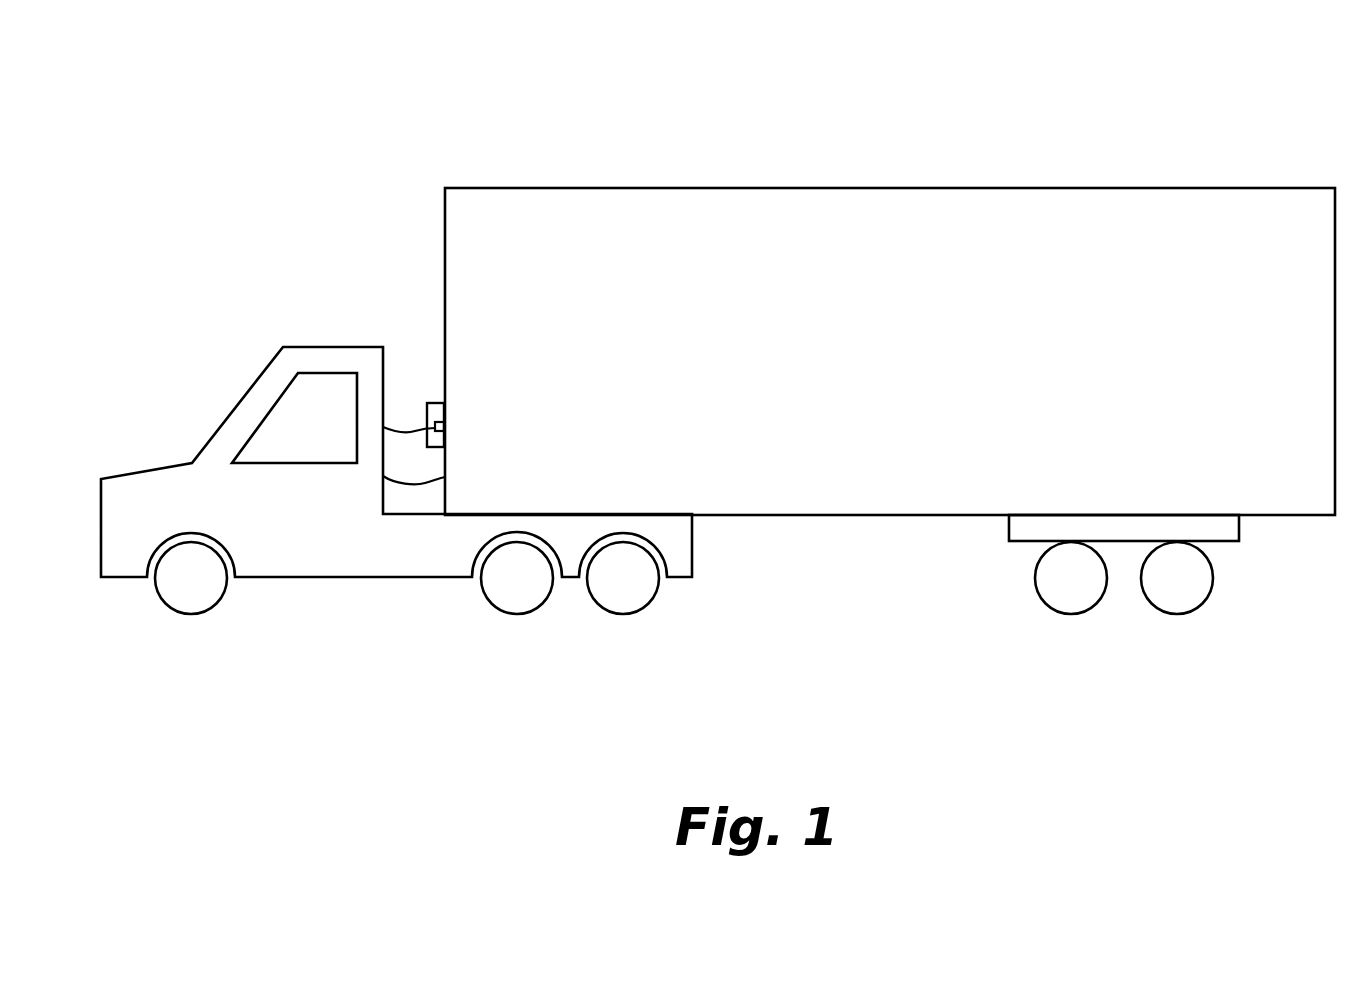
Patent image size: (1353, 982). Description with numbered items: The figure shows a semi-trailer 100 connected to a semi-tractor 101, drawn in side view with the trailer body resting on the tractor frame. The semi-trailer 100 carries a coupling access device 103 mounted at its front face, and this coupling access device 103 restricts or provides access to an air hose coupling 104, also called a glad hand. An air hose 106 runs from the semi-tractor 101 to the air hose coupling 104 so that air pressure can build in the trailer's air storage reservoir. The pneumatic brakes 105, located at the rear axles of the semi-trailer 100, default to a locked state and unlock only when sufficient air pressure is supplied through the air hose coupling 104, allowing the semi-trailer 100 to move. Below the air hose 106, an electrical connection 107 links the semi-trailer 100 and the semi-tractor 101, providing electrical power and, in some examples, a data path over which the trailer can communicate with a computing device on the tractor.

The semi-trailer 100 is at (879, 188).
The Semi-Tractor 101 is at (322, 347).
The coupling access device 103 is at (433, 403).
The air hose coupling 104 is at (444, 427).
The pneumatic brakes 105 is at (1008, 590).
The air hose 106 is at (405, 432).
The electrical connection 107 is at (413, 483).